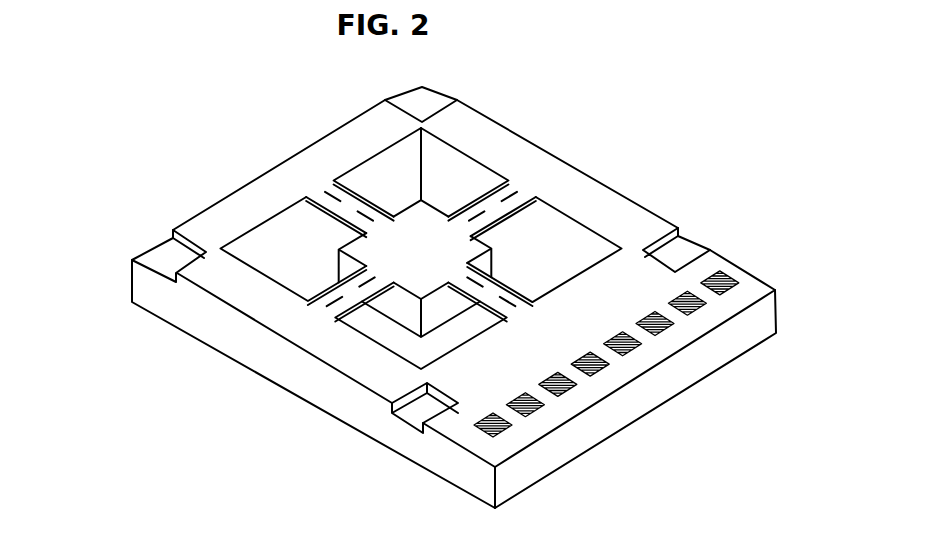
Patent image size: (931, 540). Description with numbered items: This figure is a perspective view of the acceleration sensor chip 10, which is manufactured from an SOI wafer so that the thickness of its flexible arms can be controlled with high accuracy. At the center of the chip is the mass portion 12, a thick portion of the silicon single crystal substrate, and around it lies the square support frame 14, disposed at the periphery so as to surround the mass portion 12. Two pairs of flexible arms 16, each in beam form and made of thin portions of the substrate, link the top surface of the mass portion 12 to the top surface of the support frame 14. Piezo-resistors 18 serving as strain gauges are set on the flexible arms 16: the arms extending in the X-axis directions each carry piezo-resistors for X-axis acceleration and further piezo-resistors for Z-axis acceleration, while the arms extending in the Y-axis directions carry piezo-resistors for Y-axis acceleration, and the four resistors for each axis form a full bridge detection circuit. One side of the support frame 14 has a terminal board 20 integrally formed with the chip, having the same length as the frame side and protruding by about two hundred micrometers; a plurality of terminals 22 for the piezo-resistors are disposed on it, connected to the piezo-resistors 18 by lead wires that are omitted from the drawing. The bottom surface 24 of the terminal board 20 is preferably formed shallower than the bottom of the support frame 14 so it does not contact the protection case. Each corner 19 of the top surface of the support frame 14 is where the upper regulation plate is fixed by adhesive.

The acceleration sensor chip 10 is at (307, 382).
The mass portion 12 is at (408, 238).
The support frame 14 is at (263, 207).
The flexible arms 16 is at (503, 222).
The piezo-resistors 18 is at (338, 194).
The corner 19 is at (165, 258).
The terminal board 20 is at (467, 477).
The terminals 22 is at (702, 304).
The bottom surface of the terminal board 24 is at (580, 460).